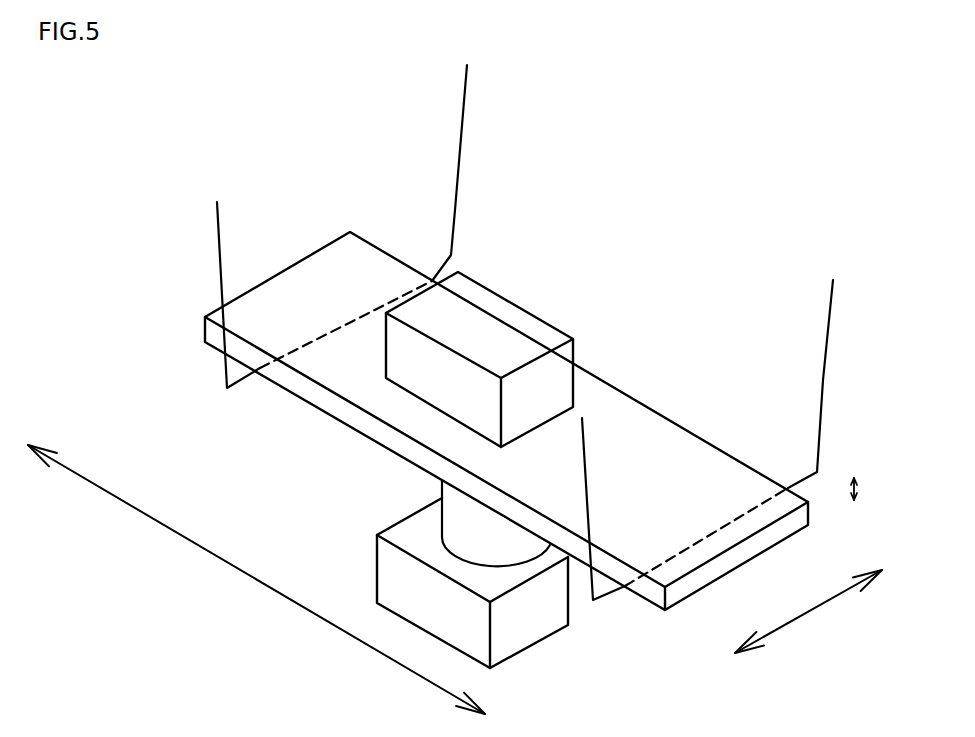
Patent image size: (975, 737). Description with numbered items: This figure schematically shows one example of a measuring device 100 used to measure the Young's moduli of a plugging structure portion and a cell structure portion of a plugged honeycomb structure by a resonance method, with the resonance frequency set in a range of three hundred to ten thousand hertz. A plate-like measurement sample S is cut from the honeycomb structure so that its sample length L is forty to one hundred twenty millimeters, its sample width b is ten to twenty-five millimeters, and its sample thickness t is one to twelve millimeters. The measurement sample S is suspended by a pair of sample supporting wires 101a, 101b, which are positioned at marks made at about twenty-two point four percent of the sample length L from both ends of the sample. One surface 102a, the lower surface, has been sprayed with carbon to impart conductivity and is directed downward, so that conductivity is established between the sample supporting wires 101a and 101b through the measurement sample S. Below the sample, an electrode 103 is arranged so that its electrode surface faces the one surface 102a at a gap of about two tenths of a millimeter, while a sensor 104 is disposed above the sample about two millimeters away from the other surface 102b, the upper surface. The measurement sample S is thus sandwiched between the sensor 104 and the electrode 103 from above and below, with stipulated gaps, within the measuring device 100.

The measuring device 100 is at (277, 187).
The sample supporting wire 101a is at (462, 193).
The sample supporting wire 101b is at (825, 400).
The one surface 102a is at (310, 403).
The another surface 102b is at (660, 432).
The electrode 103 is at (455, 517).
The sensor 104 is at (528, 325).
The measurement sample S is at (640, 378).
The sample length L is at (278, 597).
The sample thickness t is at (857, 488).
The sample width b is at (823, 603).